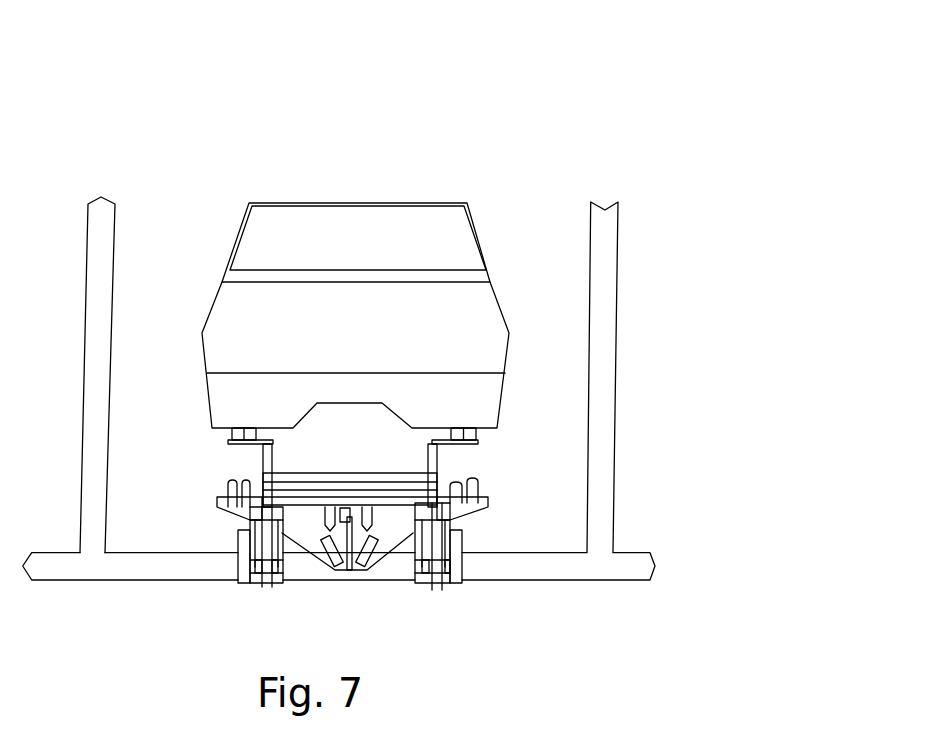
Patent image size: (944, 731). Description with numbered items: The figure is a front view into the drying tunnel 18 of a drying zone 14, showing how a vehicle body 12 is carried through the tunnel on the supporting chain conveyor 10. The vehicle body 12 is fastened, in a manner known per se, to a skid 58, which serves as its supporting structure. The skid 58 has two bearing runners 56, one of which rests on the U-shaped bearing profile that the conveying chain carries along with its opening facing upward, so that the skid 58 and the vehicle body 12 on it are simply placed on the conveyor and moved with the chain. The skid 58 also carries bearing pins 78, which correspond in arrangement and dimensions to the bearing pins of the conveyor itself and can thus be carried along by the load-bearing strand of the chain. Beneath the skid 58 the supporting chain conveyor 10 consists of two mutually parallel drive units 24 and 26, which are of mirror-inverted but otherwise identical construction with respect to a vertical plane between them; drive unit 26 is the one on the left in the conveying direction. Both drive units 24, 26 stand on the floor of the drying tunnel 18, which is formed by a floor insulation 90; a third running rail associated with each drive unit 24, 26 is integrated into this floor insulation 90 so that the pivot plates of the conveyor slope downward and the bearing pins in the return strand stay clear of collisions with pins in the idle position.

The supporting chain conveyor 10 is at (224, 568).
The vehicle body 12 is at (427, 223).
The drying zone 14 is at (590, 108).
The drying tunnel 18 is at (604, 288).
The drive unit 24 is at (253, 586).
The drive unit 26 is at (438, 585).
The bearing runner 56 is at (258, 486).
The skid 58 is at (384, 468).
The bearing pin 78 is at (258, 430).
The floor insulation 90 is at (393, 570).